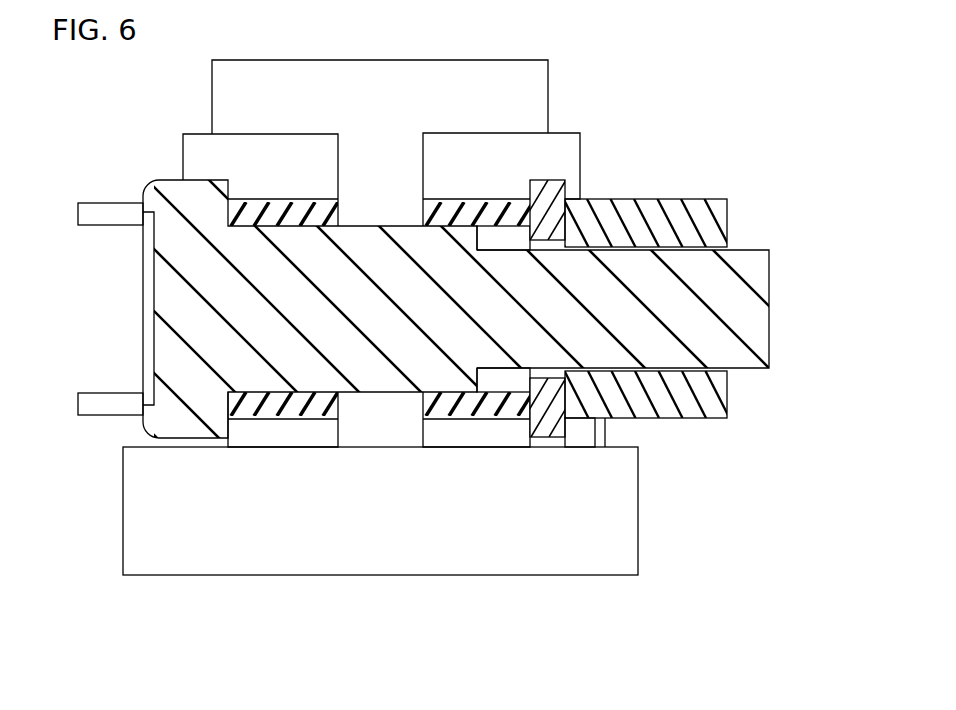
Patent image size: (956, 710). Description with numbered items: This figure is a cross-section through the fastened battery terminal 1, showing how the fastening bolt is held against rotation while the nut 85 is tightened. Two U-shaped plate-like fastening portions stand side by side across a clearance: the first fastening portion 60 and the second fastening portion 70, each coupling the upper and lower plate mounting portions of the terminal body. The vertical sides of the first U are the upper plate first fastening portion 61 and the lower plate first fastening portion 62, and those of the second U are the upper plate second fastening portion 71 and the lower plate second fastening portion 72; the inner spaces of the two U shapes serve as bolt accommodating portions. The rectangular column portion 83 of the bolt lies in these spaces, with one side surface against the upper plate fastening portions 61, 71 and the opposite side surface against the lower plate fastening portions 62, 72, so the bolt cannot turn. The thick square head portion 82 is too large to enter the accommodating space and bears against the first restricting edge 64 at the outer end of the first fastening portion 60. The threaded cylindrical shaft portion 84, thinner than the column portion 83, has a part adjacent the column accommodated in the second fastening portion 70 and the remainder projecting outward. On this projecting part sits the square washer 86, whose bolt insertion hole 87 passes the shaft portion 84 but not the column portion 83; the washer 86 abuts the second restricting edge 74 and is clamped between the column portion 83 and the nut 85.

The connector assembly 1 is at (677, 77).
The first fastening portion 60 is at (287, 433).
The upper plate first fastening portion 61 is at (283, 208).
The lower plate first fastening portion 62 is at (242, 405).
The first restricting edge 64 is at (227, 212).
The second fastening portion 70 is at (466, 433).
The upper plate second fastening portion 71 is at (467, 210).
The lower plate second fastening portion 72 is at (492, 403).
The second restricting edge 74 is at (542, 216).
The head portion 82 is at (178, 423).
The column portion 83 is at (375, 378).
The shaft portion 84 is at (673, 355).
The nut 85 is at (673, 213).
The washer 86 is at (552, 423).
The bolt insertion hole 87 is at (605, 418).